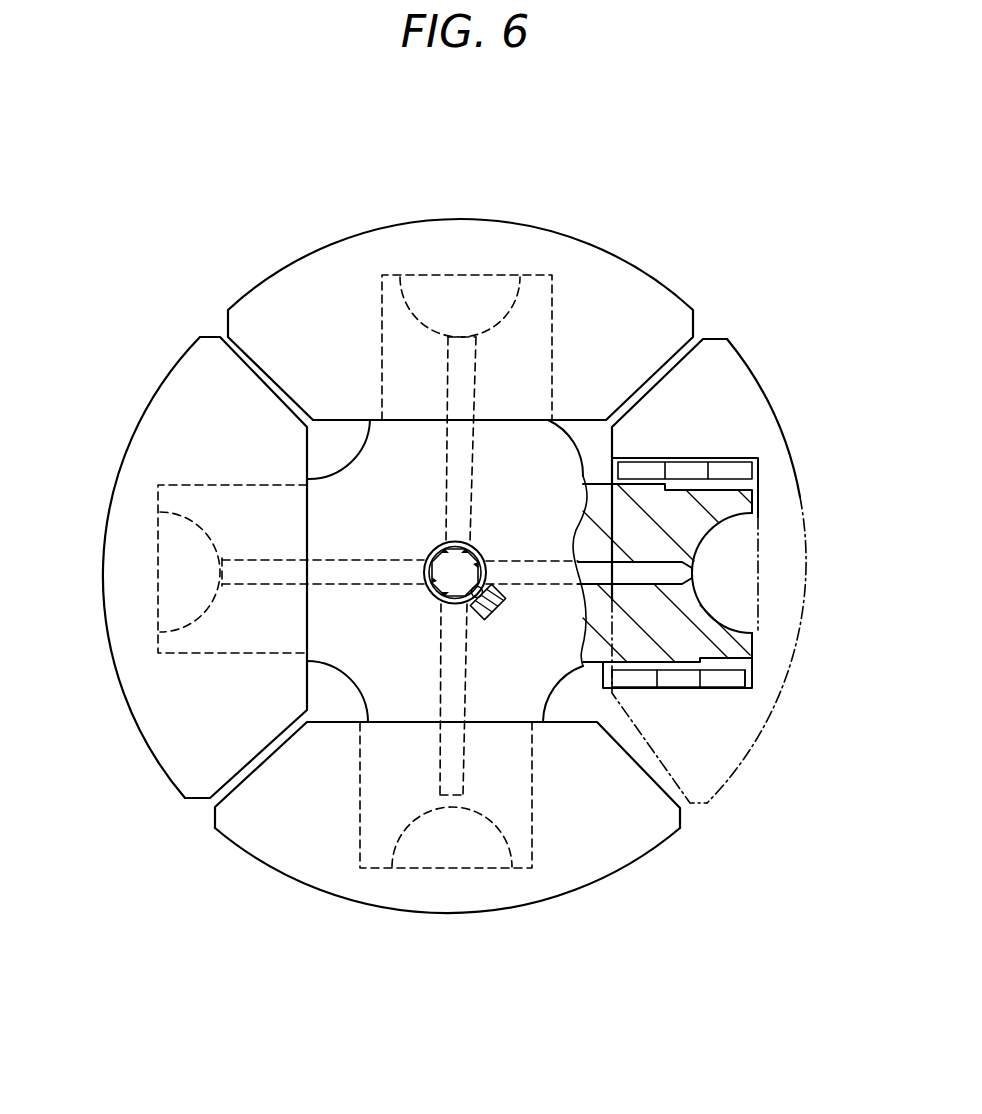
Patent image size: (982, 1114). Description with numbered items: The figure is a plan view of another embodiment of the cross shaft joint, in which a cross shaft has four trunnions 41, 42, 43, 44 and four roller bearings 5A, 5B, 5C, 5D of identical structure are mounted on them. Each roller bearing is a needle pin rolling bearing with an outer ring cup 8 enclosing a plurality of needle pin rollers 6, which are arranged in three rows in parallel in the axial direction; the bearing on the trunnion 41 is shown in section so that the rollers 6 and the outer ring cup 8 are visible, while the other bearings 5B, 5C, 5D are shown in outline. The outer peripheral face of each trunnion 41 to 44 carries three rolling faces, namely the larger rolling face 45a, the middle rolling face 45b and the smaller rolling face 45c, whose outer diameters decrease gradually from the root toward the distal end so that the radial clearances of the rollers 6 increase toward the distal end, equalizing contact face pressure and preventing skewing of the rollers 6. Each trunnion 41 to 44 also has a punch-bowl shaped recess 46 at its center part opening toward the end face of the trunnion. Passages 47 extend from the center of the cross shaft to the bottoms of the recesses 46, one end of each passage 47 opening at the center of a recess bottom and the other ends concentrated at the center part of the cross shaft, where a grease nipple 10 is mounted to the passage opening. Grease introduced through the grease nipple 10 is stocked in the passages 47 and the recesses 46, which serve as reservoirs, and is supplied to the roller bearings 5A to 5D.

The roller bearing 5A is at (794, 443).
The roller bearing 5B is at (126, 712).
The roller bearing 5C is at (594, 232).
The roller bearing 5D is at (616, 878).
The needle pin roller 6 is at (724, 461).
The outer ring cup 8 is at (651, 291).
The grease nipple 10 is at (494, 614).
The trunnion 41 is at (740, 497).
The trunnion 42 is at (546, 275).
The trunnion 43 is at (158, 493).
The trunnion 44 is at (530, 870).
The larger rolling face 45a is at (643, 682).
The middle rolling face 45b is at (692, 682).
The smaller rolling face 45c is at (742, 690).
The recess 46 is at (430, 316).
The passage 47 is at (513, 560).